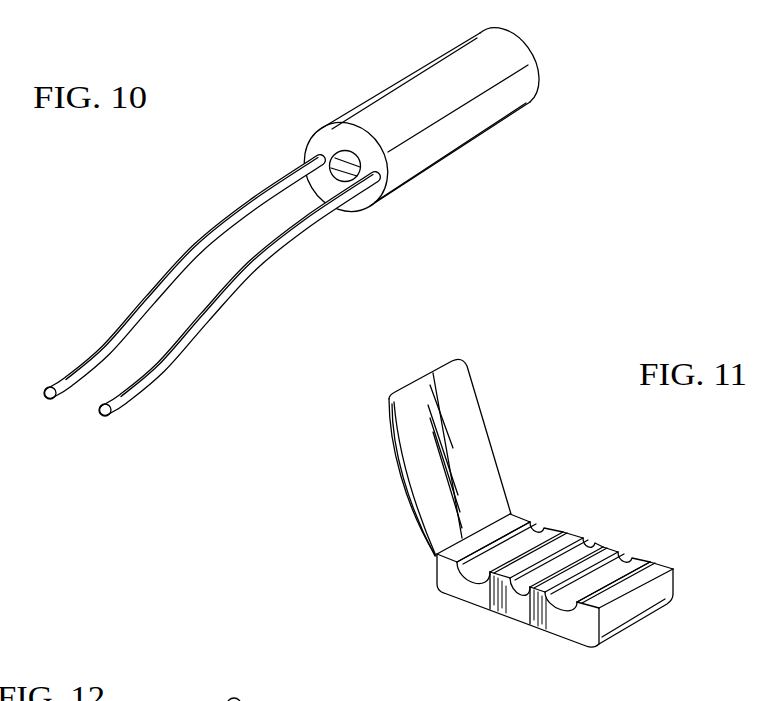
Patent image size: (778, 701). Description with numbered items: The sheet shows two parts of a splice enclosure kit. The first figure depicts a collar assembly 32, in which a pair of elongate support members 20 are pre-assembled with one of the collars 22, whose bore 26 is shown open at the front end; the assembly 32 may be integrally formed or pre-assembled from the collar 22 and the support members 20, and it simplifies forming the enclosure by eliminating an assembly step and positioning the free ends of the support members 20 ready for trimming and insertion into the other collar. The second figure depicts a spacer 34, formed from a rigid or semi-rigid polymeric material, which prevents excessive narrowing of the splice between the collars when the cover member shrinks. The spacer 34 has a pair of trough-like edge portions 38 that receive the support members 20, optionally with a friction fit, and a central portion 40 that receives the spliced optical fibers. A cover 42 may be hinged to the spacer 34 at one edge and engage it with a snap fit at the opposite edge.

In FIG. 10, the support member 20 is at (173, 273).
In FIG. 10, the collar 22 is at (495, 148).
In FIG. 10, the bore 26 is at (333, 157).
In FIG. 10, the collar assembly 32 is at (428, 168).
In FIG. 11, the spacer 34 is at (492, 625).
In FIG. 11, the trough-like edge portion 38 is at (530, 530).
In FIG. 11, the central portion 40 is at (580, 540).
In FIG. 11, the cover 42 is at (487, 418).